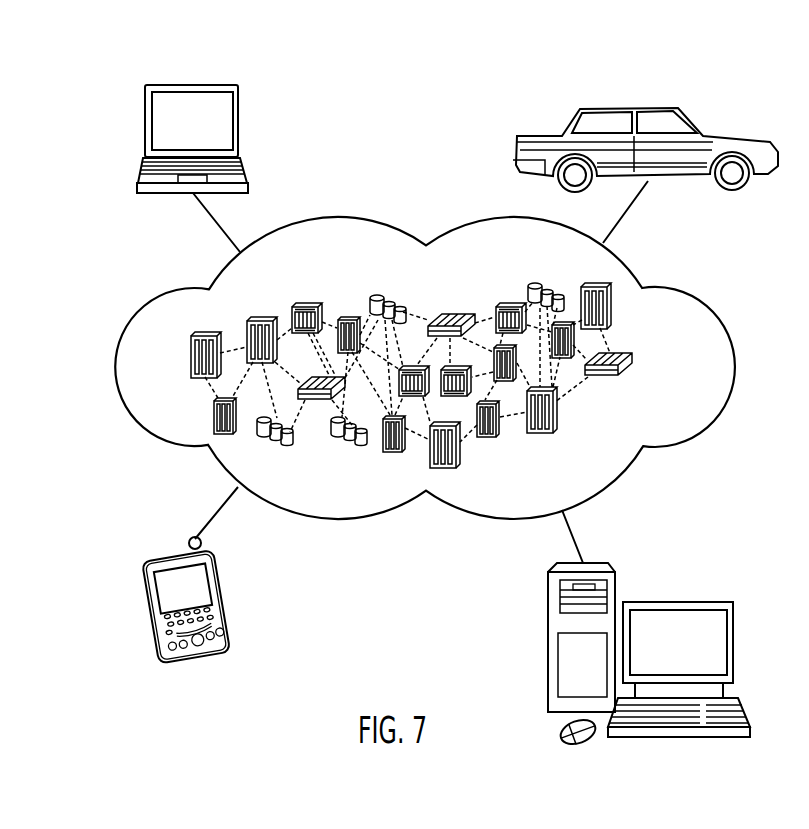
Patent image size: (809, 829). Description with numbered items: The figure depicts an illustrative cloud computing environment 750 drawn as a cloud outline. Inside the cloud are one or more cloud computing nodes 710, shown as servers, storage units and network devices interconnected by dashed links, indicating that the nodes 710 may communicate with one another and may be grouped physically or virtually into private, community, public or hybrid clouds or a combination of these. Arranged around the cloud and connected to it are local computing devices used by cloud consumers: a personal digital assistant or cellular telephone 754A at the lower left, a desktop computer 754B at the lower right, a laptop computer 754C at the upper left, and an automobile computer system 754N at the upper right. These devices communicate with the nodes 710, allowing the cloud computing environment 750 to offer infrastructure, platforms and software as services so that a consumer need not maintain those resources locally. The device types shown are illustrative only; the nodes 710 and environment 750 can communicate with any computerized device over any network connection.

The cloud computing environment 750 is at (689, 295).
The cloud computing node 710 is at (645, 366).
The personal digital assistant (PDA) or cellular telephone 754A is at (177, 553).
The desktop computer 754B is at (678, 600).
The laptop computer 754C is at (192, 84).
The automobile computer system 754N is at (628, 107).